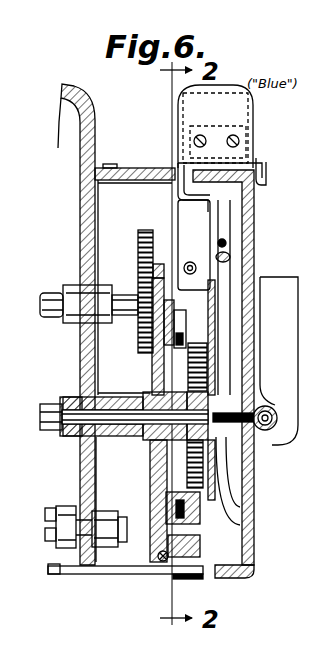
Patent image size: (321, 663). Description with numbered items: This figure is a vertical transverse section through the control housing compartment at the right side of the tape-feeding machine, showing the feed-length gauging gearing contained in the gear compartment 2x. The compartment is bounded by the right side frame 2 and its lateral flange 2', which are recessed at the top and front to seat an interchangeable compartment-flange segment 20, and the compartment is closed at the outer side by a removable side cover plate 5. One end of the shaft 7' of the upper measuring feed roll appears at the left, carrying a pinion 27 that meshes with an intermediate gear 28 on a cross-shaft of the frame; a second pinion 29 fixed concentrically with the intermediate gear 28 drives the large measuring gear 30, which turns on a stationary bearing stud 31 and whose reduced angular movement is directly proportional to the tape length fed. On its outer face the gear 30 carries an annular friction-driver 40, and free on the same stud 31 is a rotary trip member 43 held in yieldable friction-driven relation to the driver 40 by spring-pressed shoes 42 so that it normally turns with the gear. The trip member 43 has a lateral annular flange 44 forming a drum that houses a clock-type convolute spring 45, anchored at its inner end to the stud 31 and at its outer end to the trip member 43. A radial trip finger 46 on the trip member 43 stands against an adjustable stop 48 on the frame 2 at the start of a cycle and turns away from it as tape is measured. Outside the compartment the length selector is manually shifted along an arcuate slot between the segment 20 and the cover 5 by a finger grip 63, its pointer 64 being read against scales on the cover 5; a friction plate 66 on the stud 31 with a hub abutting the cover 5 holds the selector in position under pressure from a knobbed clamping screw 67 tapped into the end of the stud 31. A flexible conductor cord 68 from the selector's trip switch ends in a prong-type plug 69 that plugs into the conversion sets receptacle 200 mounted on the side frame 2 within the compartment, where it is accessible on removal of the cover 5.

The side frame 2 is at (84, 323).
The lateral flange 2' is at (106, 287).
The gear compartment 2x is at (105, 219).
The side cover plate 5 is at (249, 243).
The shaft 7' is at (72, 292).
The compartment-flange segment 20 is at (137, 168).
The pinion 27 is at (133, 320).
The intermediate gear 28 is at (144, 230).
The pinion 29 is at (152, 266).
The gear 30 is at (172, 364).
The bearing stud 31 is at (110, 414).
The friction-driver 40 is at (182, 293).
The spring-pressed shoes 42 is at (174, 332).
The trip member 43 is at (152, 362).
The annular flange 44 is at (192, 345).
The convolute spring 45 is at (187, 466).
The trip finger 46 is at (198, 549).
The stop 48 is at (205, 562).
The finger grip 63 is at (236, 103).
The length-selecting pointer 64 is at (266, 176).
The friction plate 66 is at (214, 366).
The clamping screw 67 is at (280, 436).
The conductor cord 68 is at (140, 538).
The plug 69 is at (104, 536).
The conversion sets receptacle 200 is at (56, 566).